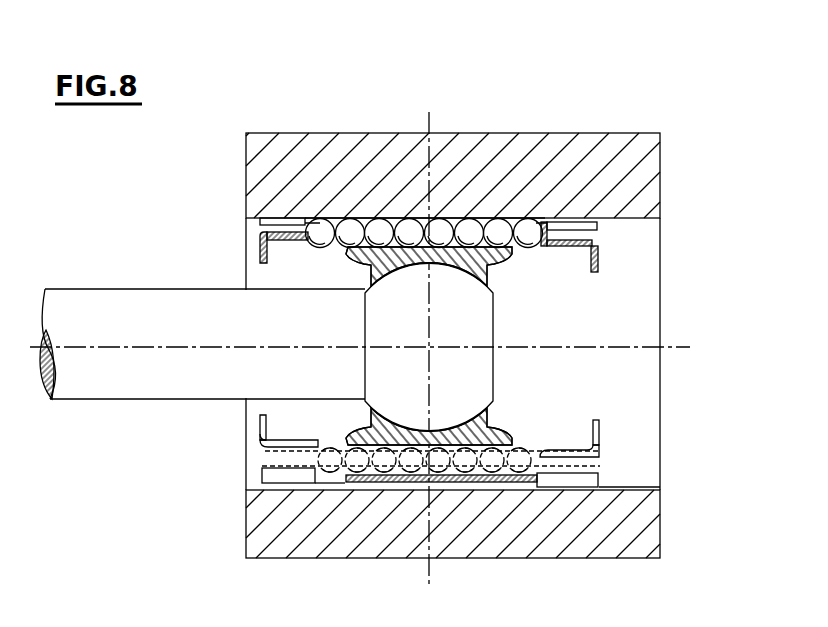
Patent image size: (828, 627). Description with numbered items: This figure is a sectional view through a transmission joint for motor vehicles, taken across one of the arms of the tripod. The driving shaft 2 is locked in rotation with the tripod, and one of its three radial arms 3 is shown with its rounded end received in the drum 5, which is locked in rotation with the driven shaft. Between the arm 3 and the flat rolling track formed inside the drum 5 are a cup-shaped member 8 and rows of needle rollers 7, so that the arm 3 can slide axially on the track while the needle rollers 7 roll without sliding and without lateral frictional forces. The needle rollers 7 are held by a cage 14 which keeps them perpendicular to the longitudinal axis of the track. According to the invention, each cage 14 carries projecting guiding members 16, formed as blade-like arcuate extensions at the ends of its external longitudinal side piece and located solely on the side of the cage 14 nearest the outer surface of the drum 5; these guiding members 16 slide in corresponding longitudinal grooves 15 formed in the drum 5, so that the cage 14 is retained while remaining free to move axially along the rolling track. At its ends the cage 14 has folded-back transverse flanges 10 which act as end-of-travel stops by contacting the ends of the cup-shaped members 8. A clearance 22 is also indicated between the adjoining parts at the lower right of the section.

The driving shaft 2 is at (92, 302).
The radial arm 3 is at (478, 314).
The drum 5 is at (455, 130).
The needle rollers 7 is at (352, 230).
The cup-shaped member 8 is at (480, 421).
The transverse flange 10 is at (268, 256).
The cage 14 is at (242, 221).
The longitudinal groove 15 is at (528, 226).
The guiding member 16 is at (262, 230).
The clearance gap 22 is at (618, 466).